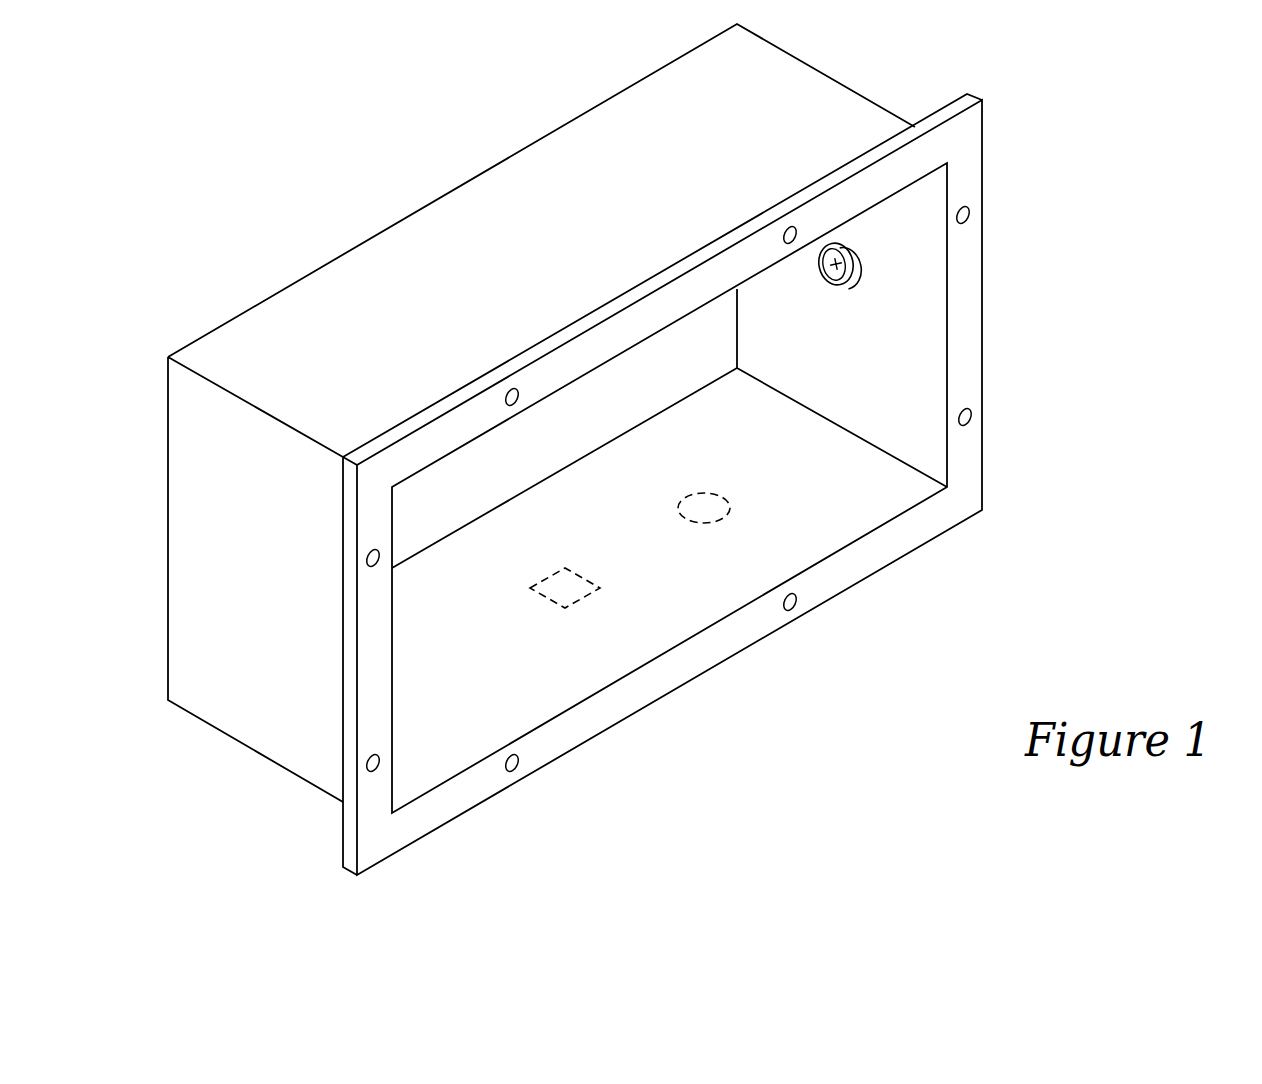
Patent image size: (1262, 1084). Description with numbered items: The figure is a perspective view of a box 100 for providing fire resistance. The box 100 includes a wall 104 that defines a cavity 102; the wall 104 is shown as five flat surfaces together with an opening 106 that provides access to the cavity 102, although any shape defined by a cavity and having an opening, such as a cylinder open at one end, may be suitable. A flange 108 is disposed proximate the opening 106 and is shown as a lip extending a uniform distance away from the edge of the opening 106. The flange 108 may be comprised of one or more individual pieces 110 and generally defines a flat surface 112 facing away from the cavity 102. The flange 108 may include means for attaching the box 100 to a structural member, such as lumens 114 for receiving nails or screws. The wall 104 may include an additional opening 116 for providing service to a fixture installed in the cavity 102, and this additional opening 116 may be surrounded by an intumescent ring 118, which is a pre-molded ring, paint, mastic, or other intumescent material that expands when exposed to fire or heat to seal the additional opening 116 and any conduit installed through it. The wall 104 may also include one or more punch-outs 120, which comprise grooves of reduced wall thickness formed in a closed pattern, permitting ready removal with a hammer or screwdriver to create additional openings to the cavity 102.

The box 100 is at (408, 146).
The cavity 102 is at (697, 588).
The wall 104 is at (850, 497).
The opening 106 is at (435, 740).
The flange 108 is at (370, 835).
The individual pieces 110 is at (968, 392).
The flat surface 112 is at (967, 177).
The lumens 114 is at (368, 560).
The additional opening 116 is at (852, 257).
The intumescent ring 118 is at (848, 290).
The punch-outs 120 is at (583, 600).